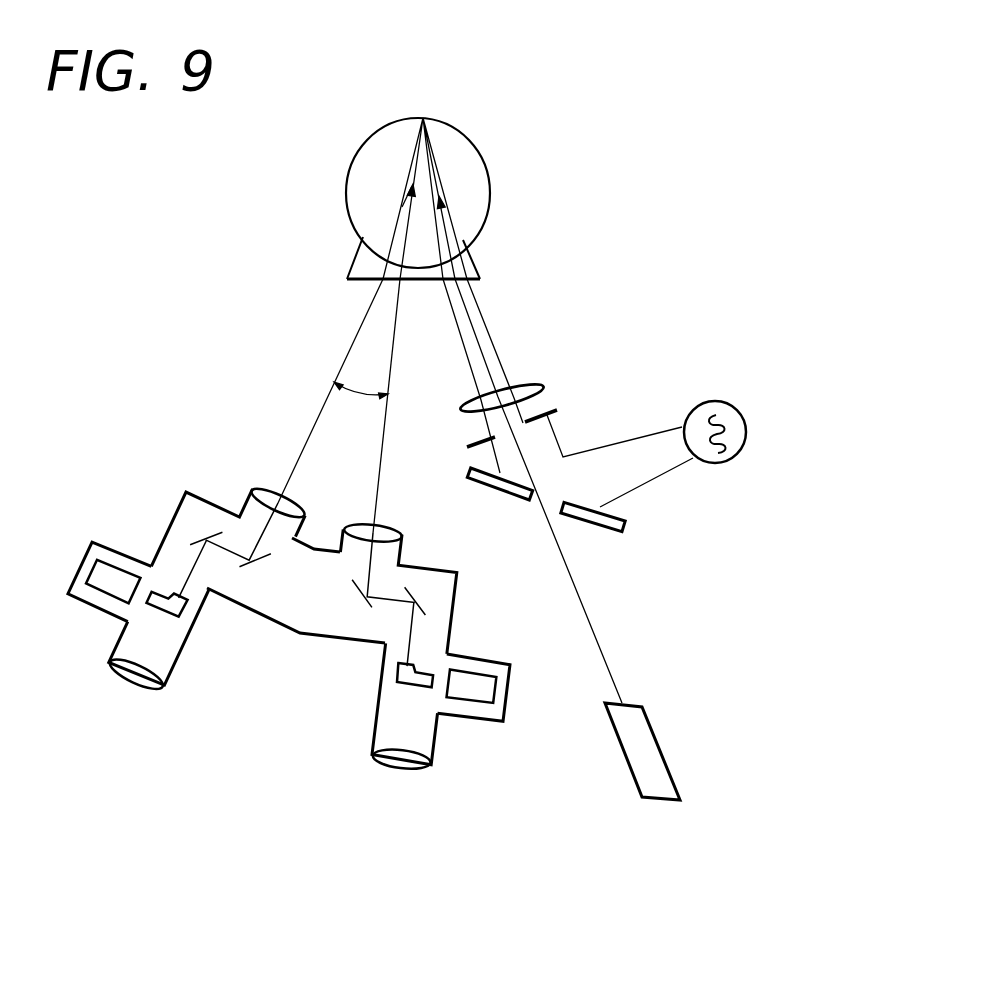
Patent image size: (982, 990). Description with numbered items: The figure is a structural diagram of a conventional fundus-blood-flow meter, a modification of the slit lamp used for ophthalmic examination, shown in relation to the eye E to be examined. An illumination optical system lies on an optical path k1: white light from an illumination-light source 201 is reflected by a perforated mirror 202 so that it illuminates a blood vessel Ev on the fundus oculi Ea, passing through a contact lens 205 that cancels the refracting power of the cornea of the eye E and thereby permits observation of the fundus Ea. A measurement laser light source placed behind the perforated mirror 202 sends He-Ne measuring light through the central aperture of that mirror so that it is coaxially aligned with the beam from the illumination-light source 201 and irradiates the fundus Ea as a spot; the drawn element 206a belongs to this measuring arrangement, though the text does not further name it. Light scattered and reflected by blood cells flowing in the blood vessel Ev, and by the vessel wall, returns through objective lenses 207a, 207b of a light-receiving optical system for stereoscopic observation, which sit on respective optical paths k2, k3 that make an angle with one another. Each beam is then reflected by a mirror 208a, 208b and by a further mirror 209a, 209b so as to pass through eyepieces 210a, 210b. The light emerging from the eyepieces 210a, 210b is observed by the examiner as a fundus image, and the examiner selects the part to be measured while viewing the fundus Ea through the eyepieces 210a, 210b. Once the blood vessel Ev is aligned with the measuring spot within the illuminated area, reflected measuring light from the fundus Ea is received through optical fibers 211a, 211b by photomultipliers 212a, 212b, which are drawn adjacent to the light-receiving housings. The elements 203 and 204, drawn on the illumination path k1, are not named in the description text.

The eye to be examined E is at (367, 137).
The fundus oculi Ea is at (467, 155).
The blood vessel Ev is at (423, 116).
The contact lens 205 is at (478, 268).
The optical path k1 is at (478, 332).
The optical path k2 is at (395, 358).
The optical path k3 is at (352, 338).
The projection lens 204 is at (540, 385).
The half mirror 203 is at (557, 410).
The perforated mirror 202 is at (623, 530).
The illumination-light source 201 is at (727, 402).
The photodetector 206a is at (650, 743).
The objective lens 207a is at (387, 528).
The objective lens 207b is at (262, 490).
The mirror 208a is at (372, 607).
The mirror 208b is at (249, 567).
The mirror 209a is at (425, 605).
The mirror 209b is at (190, 542).
The eyepiece 210a is at (402, 765).
The eyepiece 210b is at (133, 677).
The optical fiber 211a is at (418, 672).
The optical fiber 211b is at (165, 585).
The photomultiplier 212a is at (477, 698).
The photomultiplier 212b is at (95, 577).